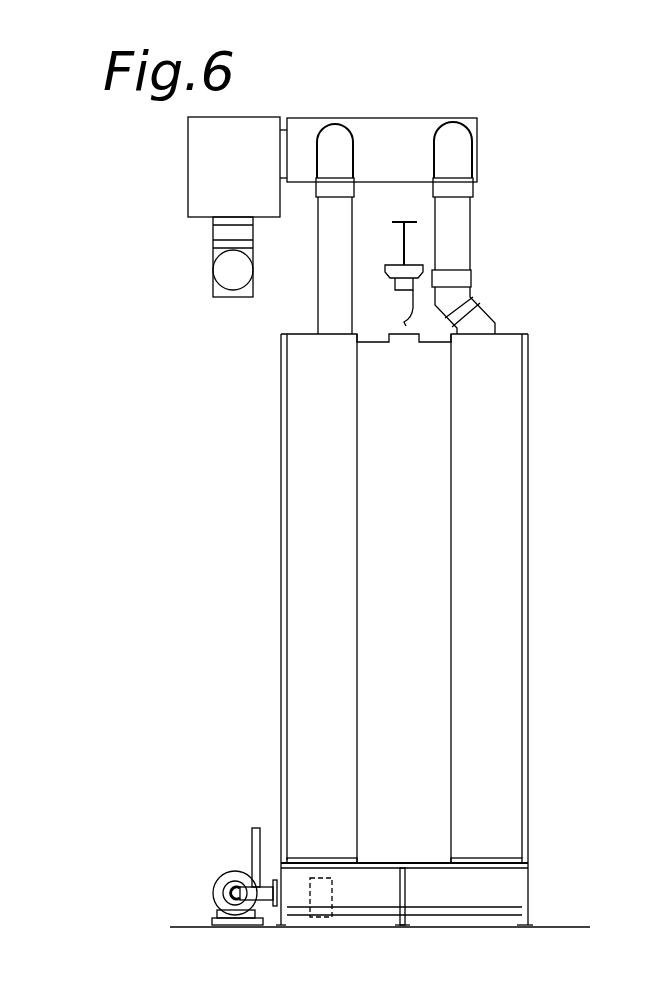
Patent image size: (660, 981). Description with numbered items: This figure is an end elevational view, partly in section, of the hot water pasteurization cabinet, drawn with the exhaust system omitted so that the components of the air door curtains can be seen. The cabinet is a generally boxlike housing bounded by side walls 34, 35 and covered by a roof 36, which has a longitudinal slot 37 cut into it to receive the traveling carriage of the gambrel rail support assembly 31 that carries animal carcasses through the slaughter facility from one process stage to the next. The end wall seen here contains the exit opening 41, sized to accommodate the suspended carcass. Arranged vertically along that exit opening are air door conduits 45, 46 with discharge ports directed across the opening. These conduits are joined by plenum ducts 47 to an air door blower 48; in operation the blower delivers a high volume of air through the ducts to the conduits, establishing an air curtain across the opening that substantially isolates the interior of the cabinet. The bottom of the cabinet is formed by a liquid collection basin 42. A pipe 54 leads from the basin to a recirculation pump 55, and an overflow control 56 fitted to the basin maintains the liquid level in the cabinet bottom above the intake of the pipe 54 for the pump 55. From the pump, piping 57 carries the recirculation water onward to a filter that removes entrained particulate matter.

The gambrel rail support assembly 31 is at (388, 308).
The side wall 34 is at (527, 562).
The side wall 35 is at (282, 550).
The roof 36 is at (508, 333).
The longitudinal slot 37 is at (410, 338).
The exit opening 41 is at (410, 589).
The liquid collection basin 42 is at (495, 888).
The air door conduit 45 is at (490, 418).
The air door conduit 46 is at (328, 473).
The plenum duct 47 is at (385, 142).
The air door blower 48 is at (185, 240).
The pipe 54 is at (217, 908).
The recirculation pump 55 is at (230, 873).
The overflow control 56 is at (332, 893).
The piping 57 is at (257, 845).